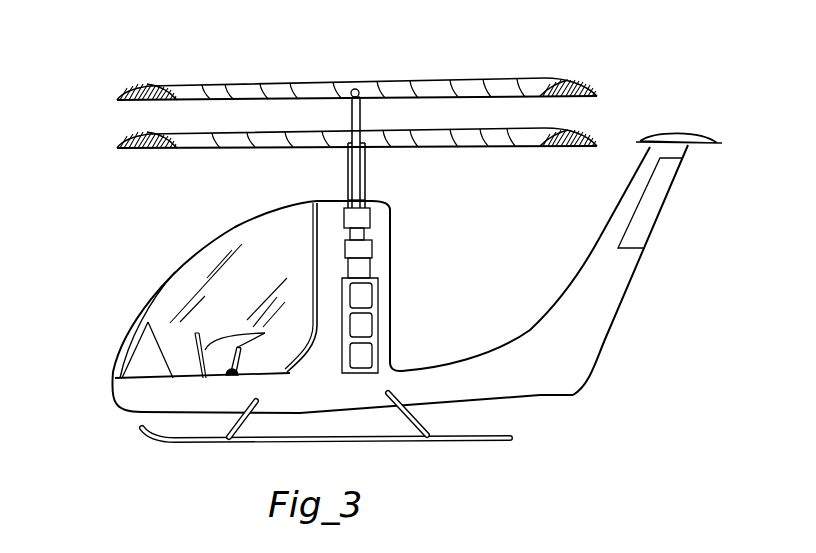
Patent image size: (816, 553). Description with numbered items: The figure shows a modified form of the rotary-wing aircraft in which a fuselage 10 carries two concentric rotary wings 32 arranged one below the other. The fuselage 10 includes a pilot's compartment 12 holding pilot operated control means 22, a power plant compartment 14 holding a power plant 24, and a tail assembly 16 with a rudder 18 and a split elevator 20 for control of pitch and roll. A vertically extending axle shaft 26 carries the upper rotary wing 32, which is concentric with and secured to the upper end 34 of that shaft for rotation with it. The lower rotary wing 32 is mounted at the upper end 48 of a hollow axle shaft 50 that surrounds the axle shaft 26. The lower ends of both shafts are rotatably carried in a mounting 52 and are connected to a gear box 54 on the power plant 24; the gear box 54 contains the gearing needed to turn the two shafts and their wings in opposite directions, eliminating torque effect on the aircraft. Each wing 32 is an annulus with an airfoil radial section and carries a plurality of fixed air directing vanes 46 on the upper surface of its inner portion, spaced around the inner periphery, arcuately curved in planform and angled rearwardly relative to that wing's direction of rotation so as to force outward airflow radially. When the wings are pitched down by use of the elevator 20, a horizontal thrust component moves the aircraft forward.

The fuselage 10 is at (122, 447).
The pilot's compartment 12 is at (203, 262).
The power plant compartment 14 is at (317, 380).
The tail assembly 16 is at (609, 341).
The rudder 18 is at (650, 217).
The split elevator 20 is at (700, 145).
The pilot operated control means 22 is at (243, 352).
The power plant 24 is at (377, 308).
The axle shaft 26 is at (352, 125).
The rotary wing 32 is at (138, 88).
The upper end of the axle shaft 34 is at (362, 113).
The fixed air directing vanes 46 is at (408, 82).
The upper end of the hollow axle shaft 48 is at (366, 148).
The hollow axle shaft 50 is at (364, 176).
The mounting 52 is at (370, 216).
The gear box 54 is at (372, 253).